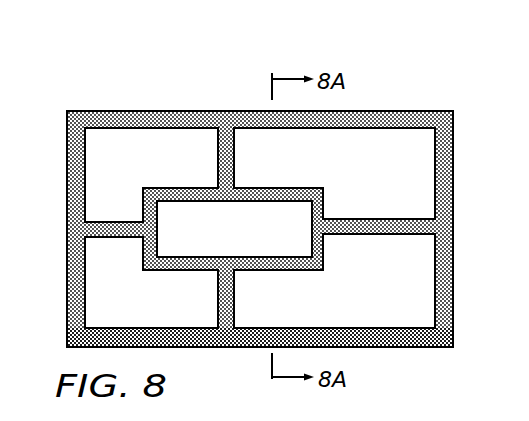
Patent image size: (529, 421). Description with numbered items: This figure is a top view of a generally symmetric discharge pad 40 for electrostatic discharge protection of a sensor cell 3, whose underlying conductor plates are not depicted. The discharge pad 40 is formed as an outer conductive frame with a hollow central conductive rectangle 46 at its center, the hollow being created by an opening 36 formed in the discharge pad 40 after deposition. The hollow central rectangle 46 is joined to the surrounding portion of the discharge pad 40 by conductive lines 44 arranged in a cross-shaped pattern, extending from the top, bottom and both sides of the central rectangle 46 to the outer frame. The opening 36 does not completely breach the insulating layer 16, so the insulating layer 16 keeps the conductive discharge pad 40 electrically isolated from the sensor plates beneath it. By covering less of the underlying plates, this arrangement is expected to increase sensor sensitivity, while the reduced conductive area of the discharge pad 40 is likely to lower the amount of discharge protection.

The sensor cell 3 is at (190, 65).
The insulating layer 16 is at (423, 348).
The opening 36 is at (248, 243).
The discharge pad 40 is at (390, 111).
The conductive line 44 is at (225, 128).
The hollow central conductive rectangle 46 is at (324, 253).